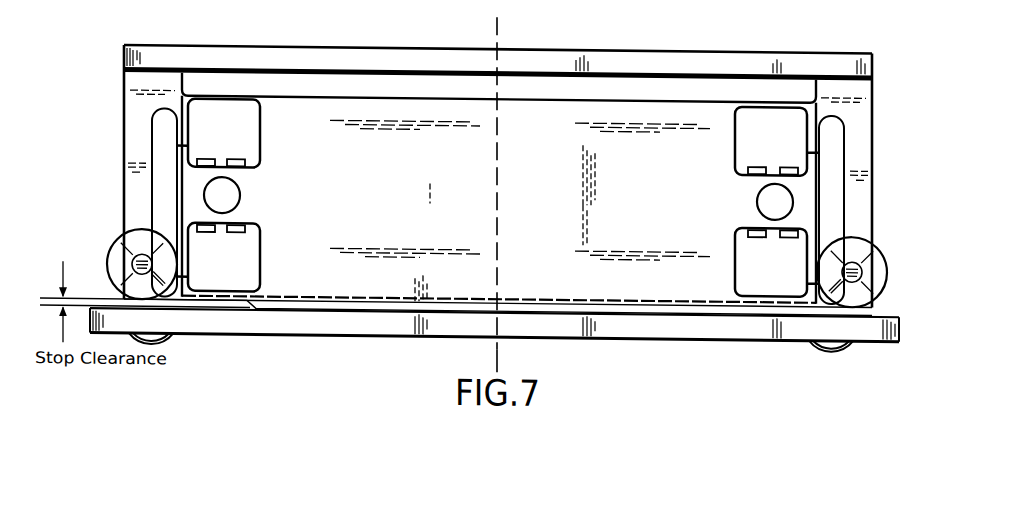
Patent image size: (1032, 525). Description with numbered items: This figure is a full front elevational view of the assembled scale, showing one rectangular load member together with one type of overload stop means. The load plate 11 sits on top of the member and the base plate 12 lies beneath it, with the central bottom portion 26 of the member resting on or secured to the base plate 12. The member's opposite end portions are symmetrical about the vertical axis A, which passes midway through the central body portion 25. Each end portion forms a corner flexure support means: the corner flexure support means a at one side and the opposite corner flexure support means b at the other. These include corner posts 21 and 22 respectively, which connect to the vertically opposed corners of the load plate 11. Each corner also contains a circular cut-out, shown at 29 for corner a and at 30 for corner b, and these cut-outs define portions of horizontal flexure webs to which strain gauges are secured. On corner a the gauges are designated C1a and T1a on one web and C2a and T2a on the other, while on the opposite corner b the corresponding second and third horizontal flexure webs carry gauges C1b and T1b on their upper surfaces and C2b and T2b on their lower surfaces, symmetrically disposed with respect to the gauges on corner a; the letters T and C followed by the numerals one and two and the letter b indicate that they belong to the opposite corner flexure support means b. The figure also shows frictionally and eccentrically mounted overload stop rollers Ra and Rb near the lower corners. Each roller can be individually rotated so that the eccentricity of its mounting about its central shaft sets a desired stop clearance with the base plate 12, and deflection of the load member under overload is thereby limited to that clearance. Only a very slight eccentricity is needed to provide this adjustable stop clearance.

The corner flexure support means a is at (117, 66).
The opposite corner flexure support means b is at (880, 62).
The load plate 11 is at (605, 60).
The base plate 12 is at (643, 322).
The corner post 21 is at (148, 82).
The corner post 22 is at (847, 84).
The central body portion 25 is at (505, 199).
The central bottom portion 26 is at (368, 308).
The circular cut-out 29 is at (232, 198).
The circular cut-out 30 is at (762, 195).
The vertical axis A is at (517, 12).
The overload stop roller Ra is at (108, 242).
The overload stop roller Rb is at (877, 238).
The strain gauge C1a is at (203, 157).
The strain gauge T1a is at (237, 157).
The strain gauge C2a is at (239, 231).
The strain gauge T2a is at (206, 231).
The strain gauge C1b is at (787, 160).
The strain gauge T1b is at (752, 160).
The strain gauge C2b is at (757, 230).
The strain gauge T2b is at (789, 230).